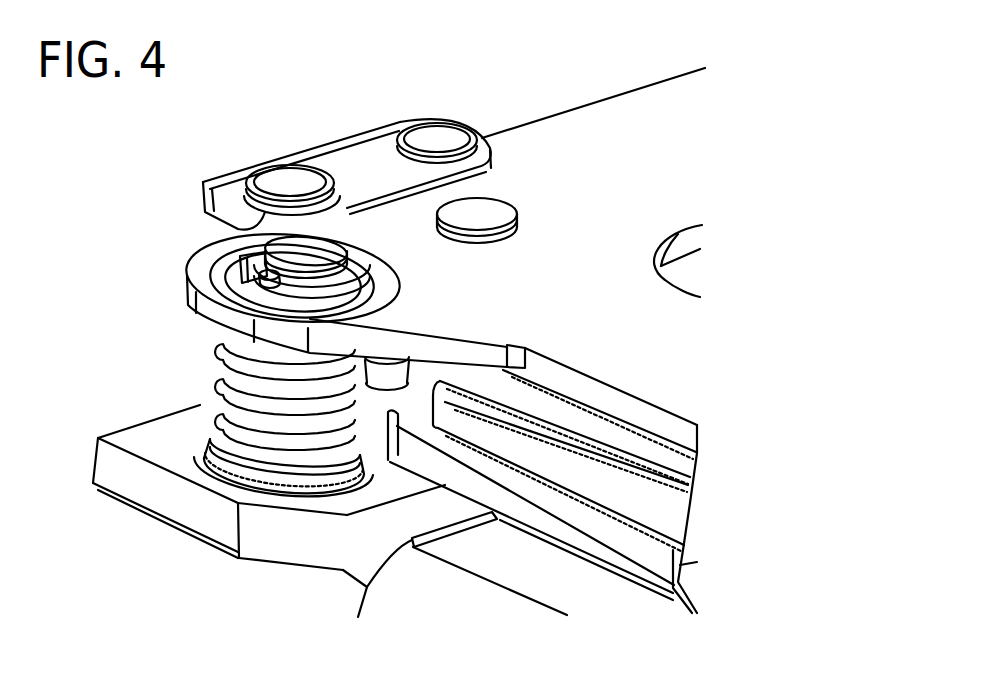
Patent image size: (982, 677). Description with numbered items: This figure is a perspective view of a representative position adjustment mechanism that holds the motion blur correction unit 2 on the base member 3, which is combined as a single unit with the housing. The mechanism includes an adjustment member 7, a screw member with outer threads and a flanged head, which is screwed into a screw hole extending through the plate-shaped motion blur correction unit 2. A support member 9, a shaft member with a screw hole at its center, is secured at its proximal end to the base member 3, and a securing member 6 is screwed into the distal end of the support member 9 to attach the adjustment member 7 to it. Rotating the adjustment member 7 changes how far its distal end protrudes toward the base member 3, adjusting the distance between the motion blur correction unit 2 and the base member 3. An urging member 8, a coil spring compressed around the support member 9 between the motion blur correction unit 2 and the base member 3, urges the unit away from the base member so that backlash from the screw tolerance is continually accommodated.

The motion blur correction unit 2 is at (593, 127).
The base member 3 is at (200, 515).
The securing member 6 is at (317, 247).
The adjustment member 7 is at (200, 259).
The urging member 8 is at (237, 374).
The support member 9 is at (247, 417).